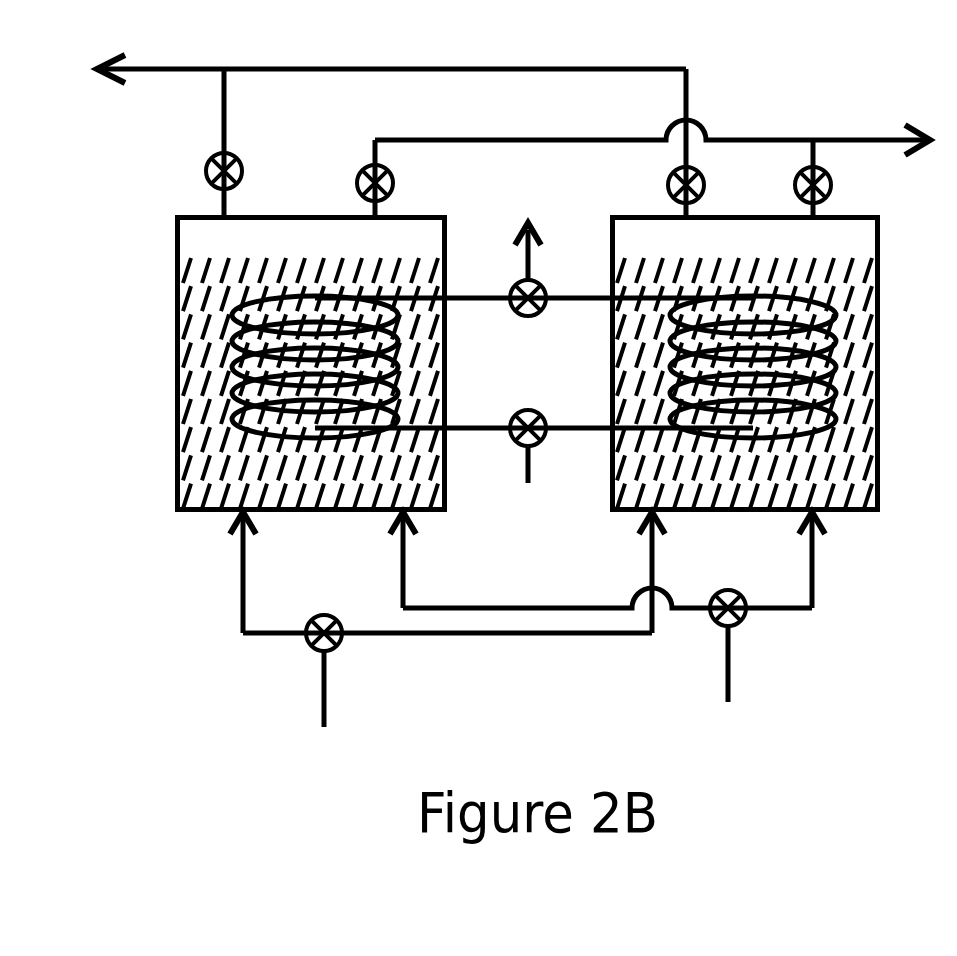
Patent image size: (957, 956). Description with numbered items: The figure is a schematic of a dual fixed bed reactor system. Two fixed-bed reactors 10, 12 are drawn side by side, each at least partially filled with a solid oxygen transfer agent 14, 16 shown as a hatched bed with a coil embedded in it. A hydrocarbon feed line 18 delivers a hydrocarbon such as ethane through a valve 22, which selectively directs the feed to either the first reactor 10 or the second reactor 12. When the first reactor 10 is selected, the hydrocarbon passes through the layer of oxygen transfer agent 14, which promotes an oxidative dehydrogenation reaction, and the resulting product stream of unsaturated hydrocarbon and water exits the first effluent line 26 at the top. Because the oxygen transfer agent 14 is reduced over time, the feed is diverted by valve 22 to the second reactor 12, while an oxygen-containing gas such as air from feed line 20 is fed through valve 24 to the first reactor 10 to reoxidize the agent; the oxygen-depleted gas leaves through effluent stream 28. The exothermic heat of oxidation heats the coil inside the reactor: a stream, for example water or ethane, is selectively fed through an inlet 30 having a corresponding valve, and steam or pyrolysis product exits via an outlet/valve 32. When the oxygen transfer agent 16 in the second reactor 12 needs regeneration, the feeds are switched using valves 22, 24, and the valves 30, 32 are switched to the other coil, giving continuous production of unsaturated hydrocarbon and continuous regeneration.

The first fixed-bed reactor 10 is at (172, 272).
The second fixed-bed reactor 12 is at (882, 250).
The oxygen transfer agent 14 is at (335, 258).
The oxygen transfer agent 16 is at (785, 260).
The hydrocarbon feed line 18 is at (320, 702).
The feed line 20 is at (733, 687).
The valve 22 is at (312, 620).
The valve 24 is at (747, 598).
The first effluent line 26 is at (180, 67).
The effluent stream 28 is at (848, 138).
The inlet 30 is at (532, 472).
The outlet/valve 32 is at (537, 232).